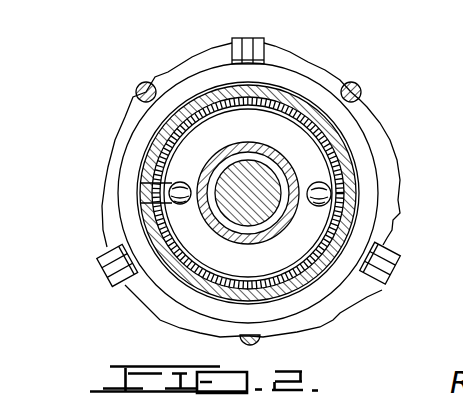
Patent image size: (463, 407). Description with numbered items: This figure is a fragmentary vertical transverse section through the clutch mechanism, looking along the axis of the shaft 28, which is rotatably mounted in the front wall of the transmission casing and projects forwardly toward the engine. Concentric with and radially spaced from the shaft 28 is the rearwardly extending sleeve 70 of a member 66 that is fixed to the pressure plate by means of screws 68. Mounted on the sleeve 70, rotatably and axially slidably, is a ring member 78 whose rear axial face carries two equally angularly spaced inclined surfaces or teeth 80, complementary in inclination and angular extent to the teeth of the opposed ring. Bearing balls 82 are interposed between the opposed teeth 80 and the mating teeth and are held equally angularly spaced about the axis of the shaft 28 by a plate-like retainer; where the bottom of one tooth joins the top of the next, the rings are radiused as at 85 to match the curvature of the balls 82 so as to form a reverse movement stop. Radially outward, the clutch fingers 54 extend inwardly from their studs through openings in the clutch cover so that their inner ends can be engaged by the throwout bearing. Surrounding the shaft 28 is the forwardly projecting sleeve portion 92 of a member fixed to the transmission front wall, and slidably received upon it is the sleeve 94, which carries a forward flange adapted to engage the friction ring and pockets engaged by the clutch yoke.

The shaft 28 is at (263, 208).
The clutch finger 54 is at (262, 38).
The member 66 is at (380, 125).
The screws 68 is at (380, 76).
The sleeve 70 is at (287, 142).
The ring member 78 is at (357, 167).
The inclined surfaces or teeth 80 is at (241, 194).
The bearing balls 82 is at (333, 206).
The radiused portion 85 is at (170, 186).
The sleeve portion 92 is at (357, 200).
The sleeve 94 is at (348, 147).